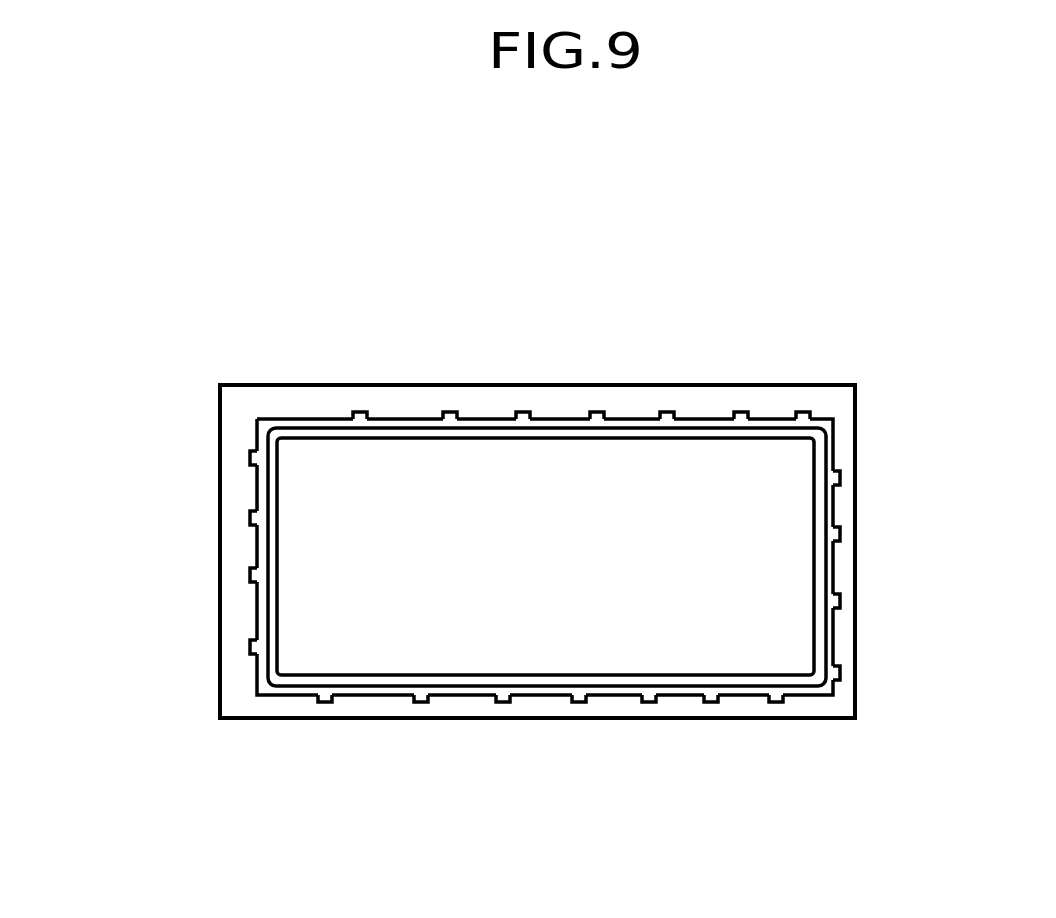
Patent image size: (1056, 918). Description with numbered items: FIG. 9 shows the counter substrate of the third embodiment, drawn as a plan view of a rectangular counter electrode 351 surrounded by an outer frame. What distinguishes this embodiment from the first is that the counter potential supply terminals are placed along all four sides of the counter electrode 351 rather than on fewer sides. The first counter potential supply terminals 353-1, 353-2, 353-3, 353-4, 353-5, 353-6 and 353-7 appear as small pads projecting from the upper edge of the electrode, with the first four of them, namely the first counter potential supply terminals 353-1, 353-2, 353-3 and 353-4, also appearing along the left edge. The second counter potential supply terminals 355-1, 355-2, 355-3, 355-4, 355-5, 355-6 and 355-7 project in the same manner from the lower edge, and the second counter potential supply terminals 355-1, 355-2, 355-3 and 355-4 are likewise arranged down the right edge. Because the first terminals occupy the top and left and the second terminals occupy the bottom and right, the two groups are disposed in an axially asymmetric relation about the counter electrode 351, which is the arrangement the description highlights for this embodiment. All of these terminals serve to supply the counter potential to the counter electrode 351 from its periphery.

The counter electrode 351 is at (575, 232).
The first counter potential supply terminal 353-1 is at (360, 412).
The first counter potential supply terminal 353-2 is at (450, 412).
The first counter potential supply terminal 353-3 is at (523, 412).
The first counter potential supply terminal 353-4 is at (597, 412).
The first counter potential supply terminal 353-5 is at (667, 412).
The first counter potential supply terminal 353-6 is at (741, 412).
The first counter potential supply terminal 353-7 is at (803, 412).
The second counter potential supply terminal 355-1 is at (325, 703).
The second counter potential supply terminal 355-2 is at (420, 703).
The second counter potential supply terminal 355-3 is at (503, 703).
The second counter potential supply terminal 355-4 is at (579, 703).
The second counter potential supply terminal 355-5 is at (649, 703).
The second counter potential supply terminal 355-6 is at (711, 703).
The second counter potential supply terminal 355-7 is at (776, 703).